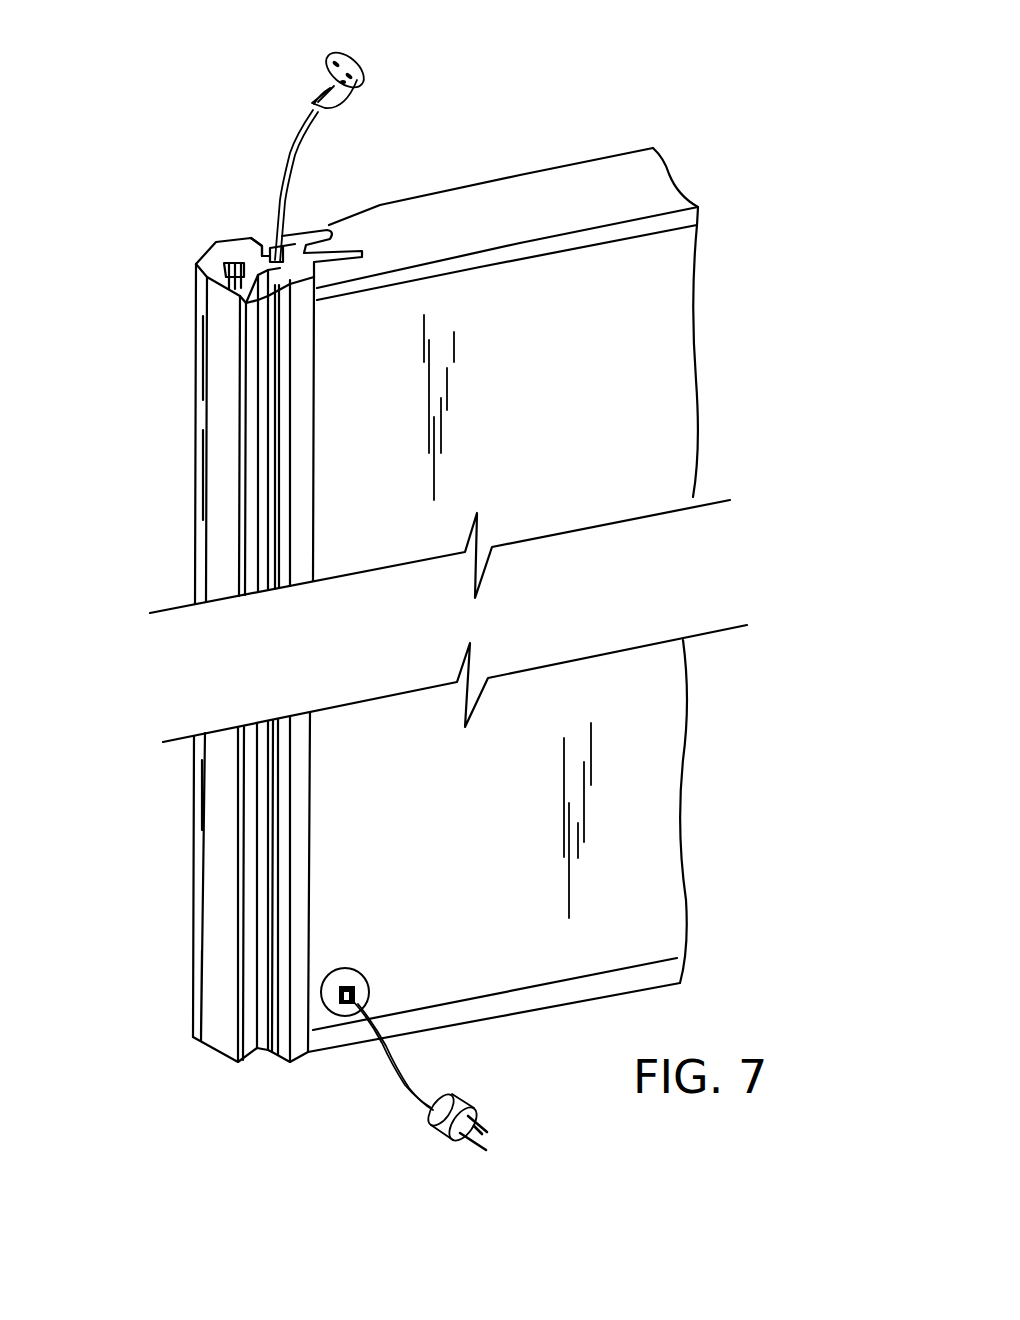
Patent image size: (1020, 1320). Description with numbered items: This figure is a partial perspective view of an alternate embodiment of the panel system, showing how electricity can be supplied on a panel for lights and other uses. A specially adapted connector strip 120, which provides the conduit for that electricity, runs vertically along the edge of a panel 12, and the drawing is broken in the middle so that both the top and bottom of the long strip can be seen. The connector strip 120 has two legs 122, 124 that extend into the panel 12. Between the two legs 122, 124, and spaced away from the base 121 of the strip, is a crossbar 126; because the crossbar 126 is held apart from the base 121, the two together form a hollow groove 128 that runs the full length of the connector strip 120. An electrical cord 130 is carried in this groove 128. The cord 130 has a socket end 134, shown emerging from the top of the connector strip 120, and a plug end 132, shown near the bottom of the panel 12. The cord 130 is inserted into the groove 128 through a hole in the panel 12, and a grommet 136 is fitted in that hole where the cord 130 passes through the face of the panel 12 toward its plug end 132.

The panel 12 is at (696, 268).
The connector strip 120 is at (163, 266).
The base 121 is at (236, 237).
The leg 122 is at (262, 232).
The leg 124 is at (380, 250).
The crossbar 126 is at (358, 242).
The hollow groove 128 is at (292, 228).
The electrical cord 130 is at (307, 115).
The plug end 132 is at (433, 1135).
The socket end 134 is at (323, 66).
The grommet 136 is at (348, 977).